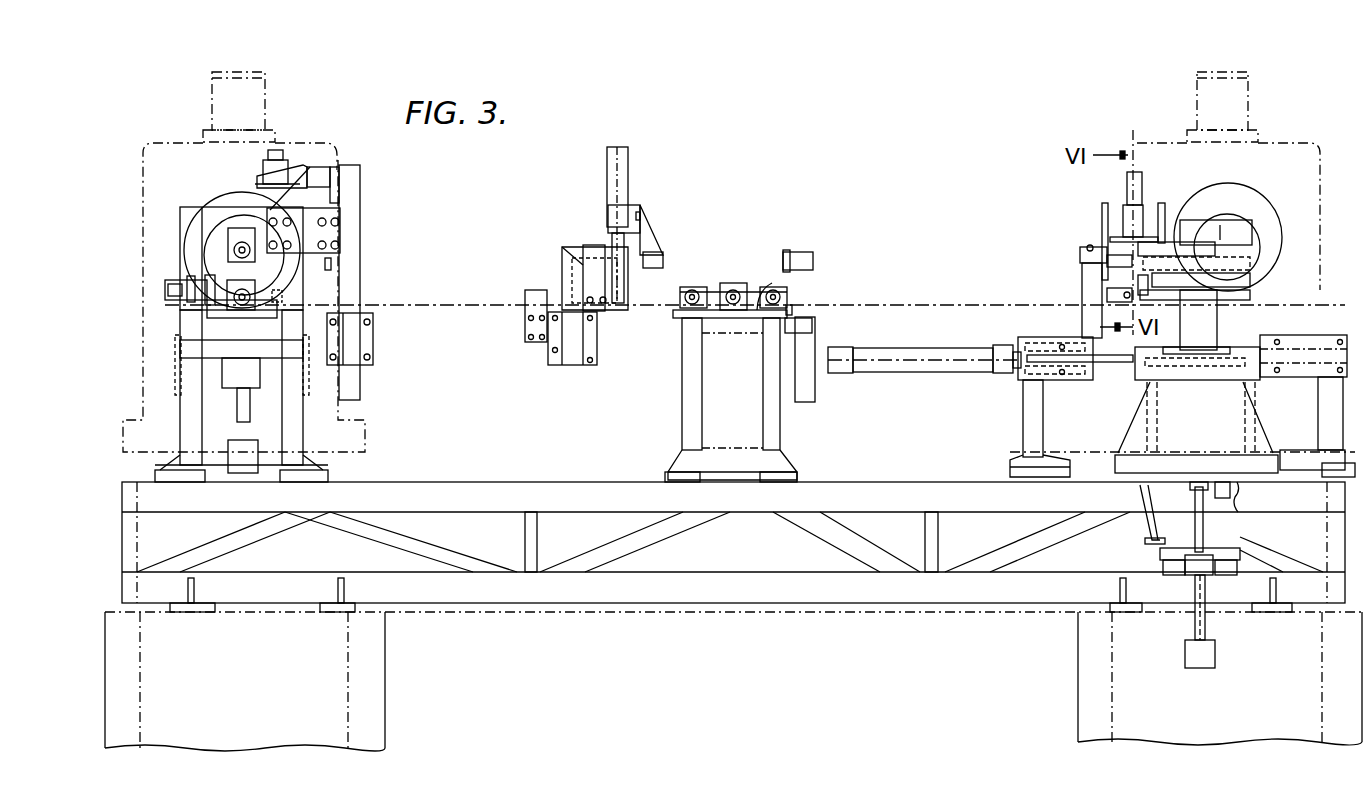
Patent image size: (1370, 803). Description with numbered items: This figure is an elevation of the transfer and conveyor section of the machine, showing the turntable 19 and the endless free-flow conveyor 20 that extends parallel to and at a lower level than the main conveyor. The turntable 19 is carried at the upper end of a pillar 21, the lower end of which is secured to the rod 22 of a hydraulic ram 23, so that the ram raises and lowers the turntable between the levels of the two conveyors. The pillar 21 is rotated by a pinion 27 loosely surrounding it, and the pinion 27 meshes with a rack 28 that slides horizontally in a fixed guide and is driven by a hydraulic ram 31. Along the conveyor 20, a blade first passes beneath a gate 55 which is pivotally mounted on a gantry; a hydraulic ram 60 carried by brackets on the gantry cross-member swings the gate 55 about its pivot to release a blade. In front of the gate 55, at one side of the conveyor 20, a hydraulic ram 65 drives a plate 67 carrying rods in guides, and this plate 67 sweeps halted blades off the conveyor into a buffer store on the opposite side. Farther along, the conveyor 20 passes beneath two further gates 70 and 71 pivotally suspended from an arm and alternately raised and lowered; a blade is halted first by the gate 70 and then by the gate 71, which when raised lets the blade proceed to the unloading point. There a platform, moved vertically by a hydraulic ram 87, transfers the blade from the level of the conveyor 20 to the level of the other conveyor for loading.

The turntable 19 is at (1250, 285).
The endless free-flow conveyor 20 is at (457, 308).
The pillar 21 is at (1205, 327).
The rod 22 is at (1197, 520).
The hydraulic ram 23 is at (1198, 623).
The pinion 27 is at (1232, 345).
The rack 28 is at (1072, 353).
The hydraulic ram 31 is at (897, 360).
The gate 55 is at (636, 278).
The hydraulic ram 60 is at (617, 178).
The hydraulic ram 65 is at (730, 286).
The plate 67 is at (762, 286).
The gate 70 is at (331, 268).
The gate 71 is at (276, 282).
The hydraulic ram 87 is at (245, 432).